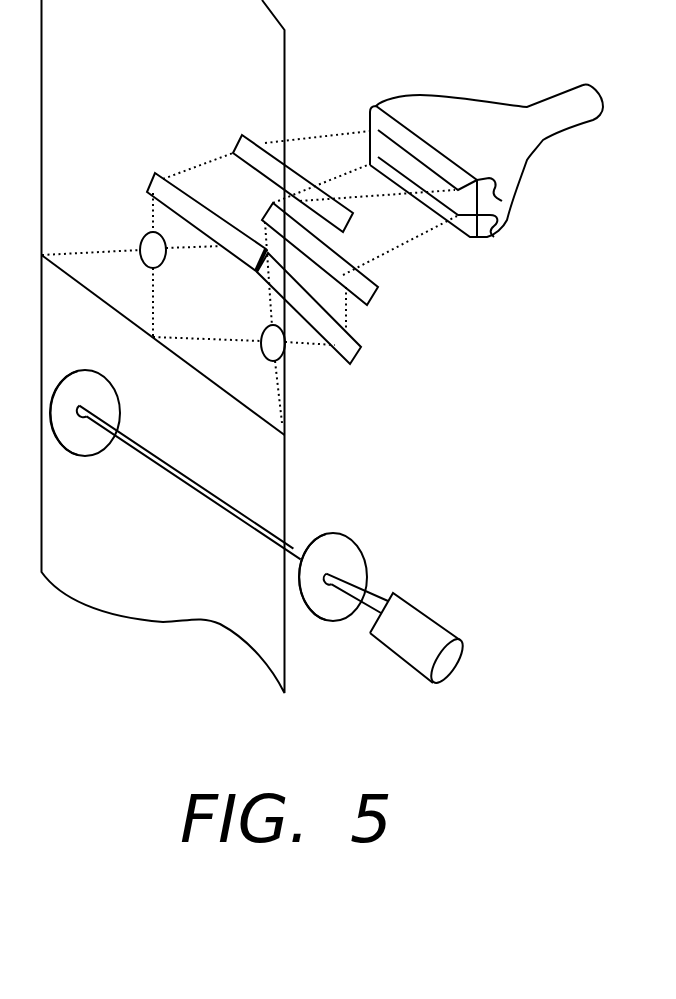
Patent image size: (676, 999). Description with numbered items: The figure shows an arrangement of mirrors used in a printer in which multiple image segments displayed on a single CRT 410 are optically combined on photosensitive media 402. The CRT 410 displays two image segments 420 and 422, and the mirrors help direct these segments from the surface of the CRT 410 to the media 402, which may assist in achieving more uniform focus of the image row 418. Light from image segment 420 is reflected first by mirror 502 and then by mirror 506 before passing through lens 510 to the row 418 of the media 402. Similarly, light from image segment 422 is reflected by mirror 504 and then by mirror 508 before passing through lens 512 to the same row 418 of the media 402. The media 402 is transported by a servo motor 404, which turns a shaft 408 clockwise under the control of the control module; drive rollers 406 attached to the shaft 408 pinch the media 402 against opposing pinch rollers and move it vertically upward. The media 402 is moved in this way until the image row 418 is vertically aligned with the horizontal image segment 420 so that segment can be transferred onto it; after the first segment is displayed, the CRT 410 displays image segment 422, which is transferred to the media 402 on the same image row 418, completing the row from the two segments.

The photosensitive media 402 is at (285, 487).
The servo motor 404 is at (440, 590).
The drive rollers 406 is at (110, 447).
The shaft 408 is at (163, 452).
The CRT 410 is at (517, 137).
The image row 418 is at (155, 338).
The image segment 420 is at (517, 206).
The image segment 422 is at (488, 234).
The mirror 502 is at (239, 139).
The mirror 504 is at (381, 292).
The mirror 506 is at (148, 187).
The mirror 508 is at (363, 352).
The lens 510 is at (167, 258).
The lens 512 is at (285, 359).